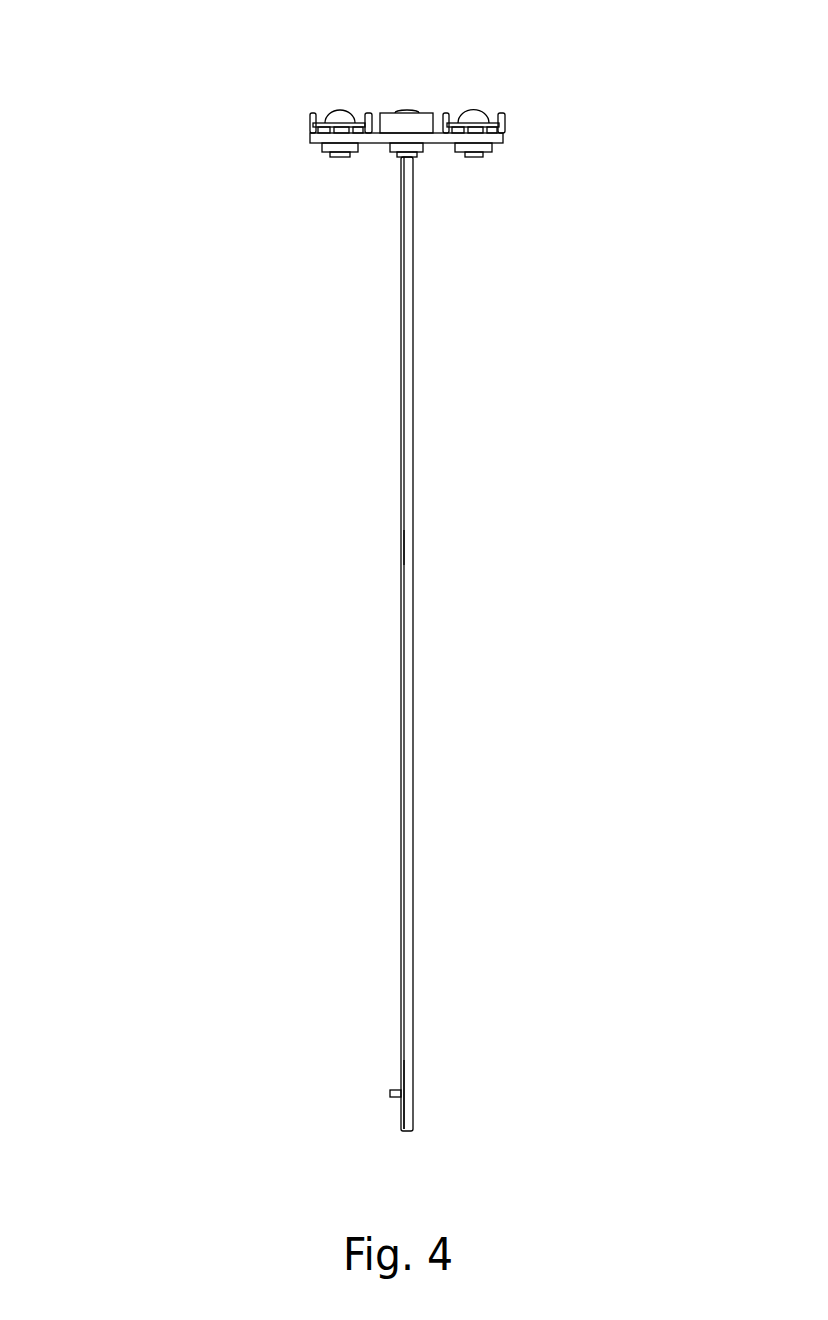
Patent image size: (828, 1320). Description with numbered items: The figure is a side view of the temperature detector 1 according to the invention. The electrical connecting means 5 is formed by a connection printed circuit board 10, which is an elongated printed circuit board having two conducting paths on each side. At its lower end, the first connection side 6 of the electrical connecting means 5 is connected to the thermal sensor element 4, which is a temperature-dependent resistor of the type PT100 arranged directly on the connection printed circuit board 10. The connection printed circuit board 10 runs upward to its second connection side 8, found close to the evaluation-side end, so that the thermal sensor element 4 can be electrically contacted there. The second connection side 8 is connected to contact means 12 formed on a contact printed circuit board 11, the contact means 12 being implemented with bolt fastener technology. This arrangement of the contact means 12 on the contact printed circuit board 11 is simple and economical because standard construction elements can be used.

The temperature detector 1 is at (240, 361).
The thermal sensor element 4 is at (390, 1093).
The electrical connecting means 5 is at (422, 545).
The first connection side 6 is at (447, 1065).
The second connection side 8 is at (379, 180).
The connection printed circuit board 10 is at (407, 439).
The contact printed circuit board 11 is at (503, 137).
The contact means 12 is at (337, 115).